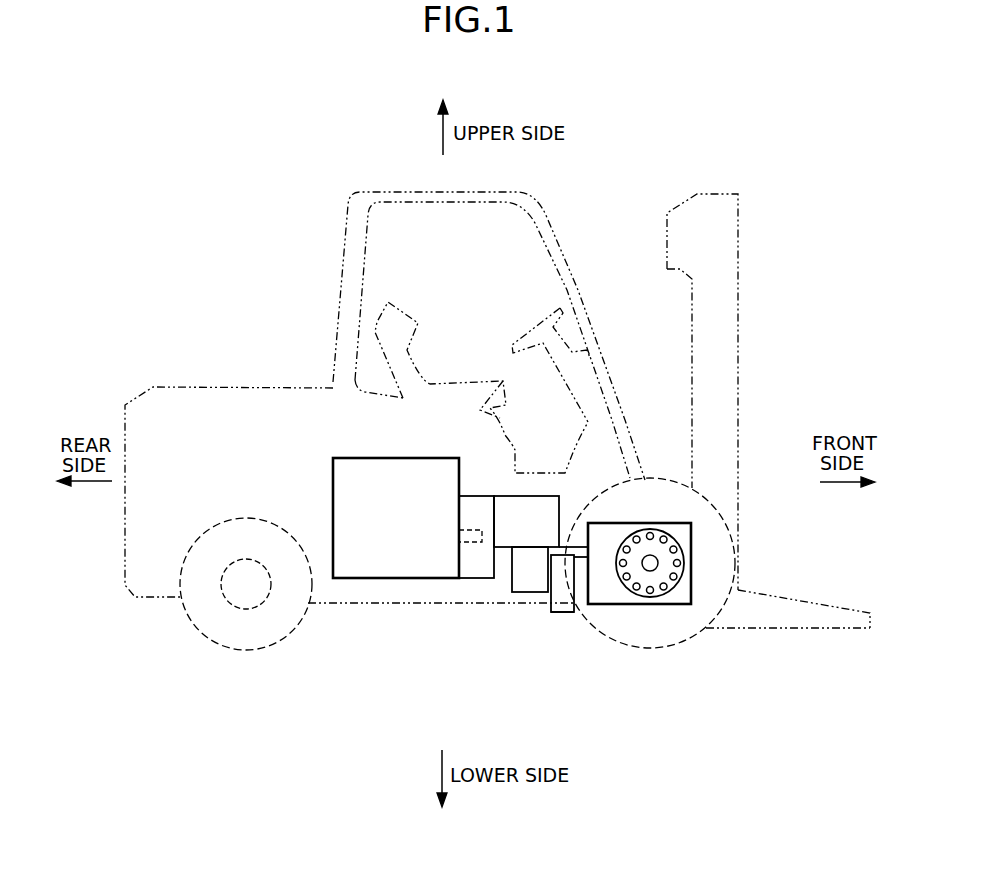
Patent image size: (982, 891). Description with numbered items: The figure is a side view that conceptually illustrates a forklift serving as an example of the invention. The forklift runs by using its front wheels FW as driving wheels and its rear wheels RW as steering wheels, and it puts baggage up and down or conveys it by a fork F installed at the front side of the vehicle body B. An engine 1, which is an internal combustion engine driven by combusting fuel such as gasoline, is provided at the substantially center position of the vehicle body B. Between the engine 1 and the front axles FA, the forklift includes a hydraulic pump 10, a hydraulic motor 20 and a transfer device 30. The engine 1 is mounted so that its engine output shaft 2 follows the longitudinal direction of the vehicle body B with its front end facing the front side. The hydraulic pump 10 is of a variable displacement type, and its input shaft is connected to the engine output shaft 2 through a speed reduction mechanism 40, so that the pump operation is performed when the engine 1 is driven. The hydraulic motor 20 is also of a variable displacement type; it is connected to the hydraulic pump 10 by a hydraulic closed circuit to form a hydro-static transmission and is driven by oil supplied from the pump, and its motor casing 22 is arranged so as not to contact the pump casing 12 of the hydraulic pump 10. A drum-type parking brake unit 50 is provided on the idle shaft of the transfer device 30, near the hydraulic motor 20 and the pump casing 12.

The vehicle body B is at (216, 387).
The fork F is at (805, 615).
The rear wheels RW is at (246, 650).
The front wheels FW is at (687, 642).
The front axles FA is at (650, 563).
The engine 1 is at (360, 458).
The engine output shaft 2 is at (470, 542).
The hydraulic pump 10 is at (540, 492).
The pump casing 12 is at (513, 496).
The hydraulic motor 20 is at (527, 580).
The motor casing 22 is at (537, 597).
The transfer device 30 is at (657, 523).
The speed reduction mechanism 40 is at (480, 568).
The parking brake unit 50 is at (563, 613).